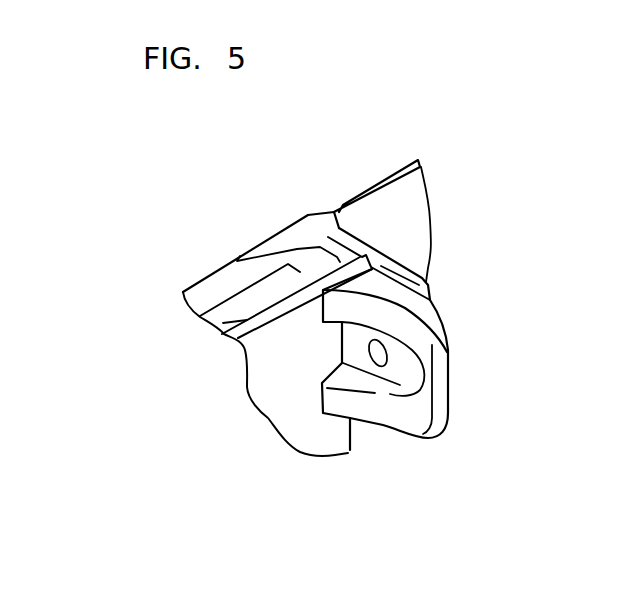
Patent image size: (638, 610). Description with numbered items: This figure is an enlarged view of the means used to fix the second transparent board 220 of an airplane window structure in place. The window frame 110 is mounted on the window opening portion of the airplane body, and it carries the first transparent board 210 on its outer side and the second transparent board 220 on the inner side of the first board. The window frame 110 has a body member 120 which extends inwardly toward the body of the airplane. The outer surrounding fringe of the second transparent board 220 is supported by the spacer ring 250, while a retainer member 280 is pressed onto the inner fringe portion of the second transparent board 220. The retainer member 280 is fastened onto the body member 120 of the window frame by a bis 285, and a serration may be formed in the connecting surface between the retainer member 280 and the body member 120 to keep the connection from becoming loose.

The window frame 110 is at (306, 227).
The body member 120 is at (424, 283).
The first transparent board 210 is at (220, 289).
The second transparent board 220 is at (225, 335).
The spacer ring 250 is at (338, 228).
The retainer member 280 is at (448, 378).
The bis 285 is at (378, 362).